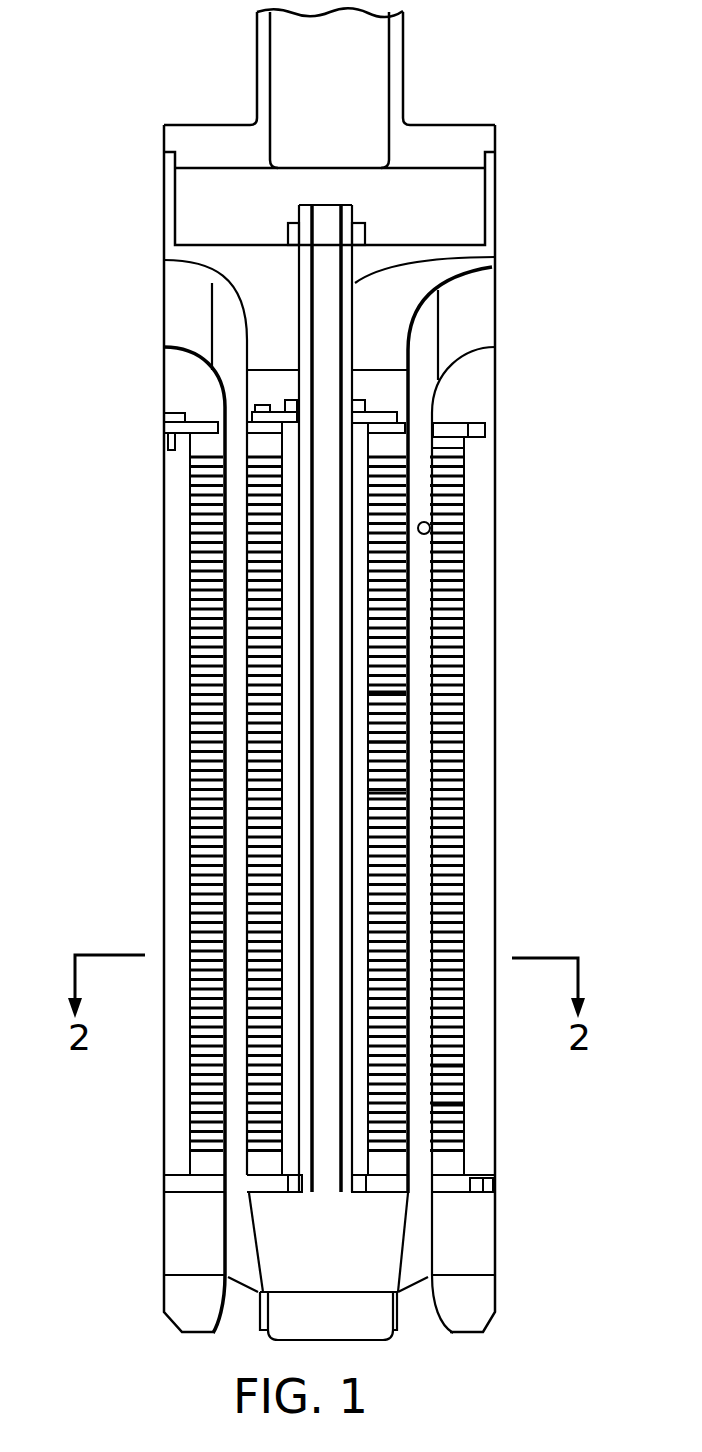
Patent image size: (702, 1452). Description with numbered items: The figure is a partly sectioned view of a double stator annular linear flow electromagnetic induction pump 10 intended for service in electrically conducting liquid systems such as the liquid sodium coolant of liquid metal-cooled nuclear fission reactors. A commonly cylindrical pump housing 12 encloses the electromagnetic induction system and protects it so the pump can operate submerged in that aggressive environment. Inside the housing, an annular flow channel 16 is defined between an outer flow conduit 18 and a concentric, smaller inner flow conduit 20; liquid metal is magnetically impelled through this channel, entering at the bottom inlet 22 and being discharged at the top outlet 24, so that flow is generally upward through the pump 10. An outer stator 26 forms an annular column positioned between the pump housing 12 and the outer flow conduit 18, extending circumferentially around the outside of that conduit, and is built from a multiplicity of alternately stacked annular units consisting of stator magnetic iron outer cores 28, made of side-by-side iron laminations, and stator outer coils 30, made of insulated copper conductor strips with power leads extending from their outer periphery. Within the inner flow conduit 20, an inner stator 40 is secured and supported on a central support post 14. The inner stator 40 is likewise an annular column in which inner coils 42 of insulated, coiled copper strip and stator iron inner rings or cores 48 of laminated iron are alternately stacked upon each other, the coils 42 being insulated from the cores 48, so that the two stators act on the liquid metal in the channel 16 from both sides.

The double stator annular linear flow electromagnetic induction pump 10 is at (140, 742).
The pump housing 12 is at (495, 632).
The central support post 14 is at (495, 258).
The annular flow channel 16 is at (417, 481).
The outer flow conduit 18 is at (430, 525).
The inner flow conduit 20 is at (410, 582).
The inlet 22 is at (417, 1300).
The outlet 24 is at (475, 310).
The outer stator 26 is at (453, 1142).
The stator magnetic iron outer cores 28 is at (460, 1066).
The stator outer coils 30 is at (462, 1105).
The inner stator 40 is at (408, 692).
The inner coils 42 is at (410, 793).
The stator iron inner rings or cores 48 is at (410, 742).